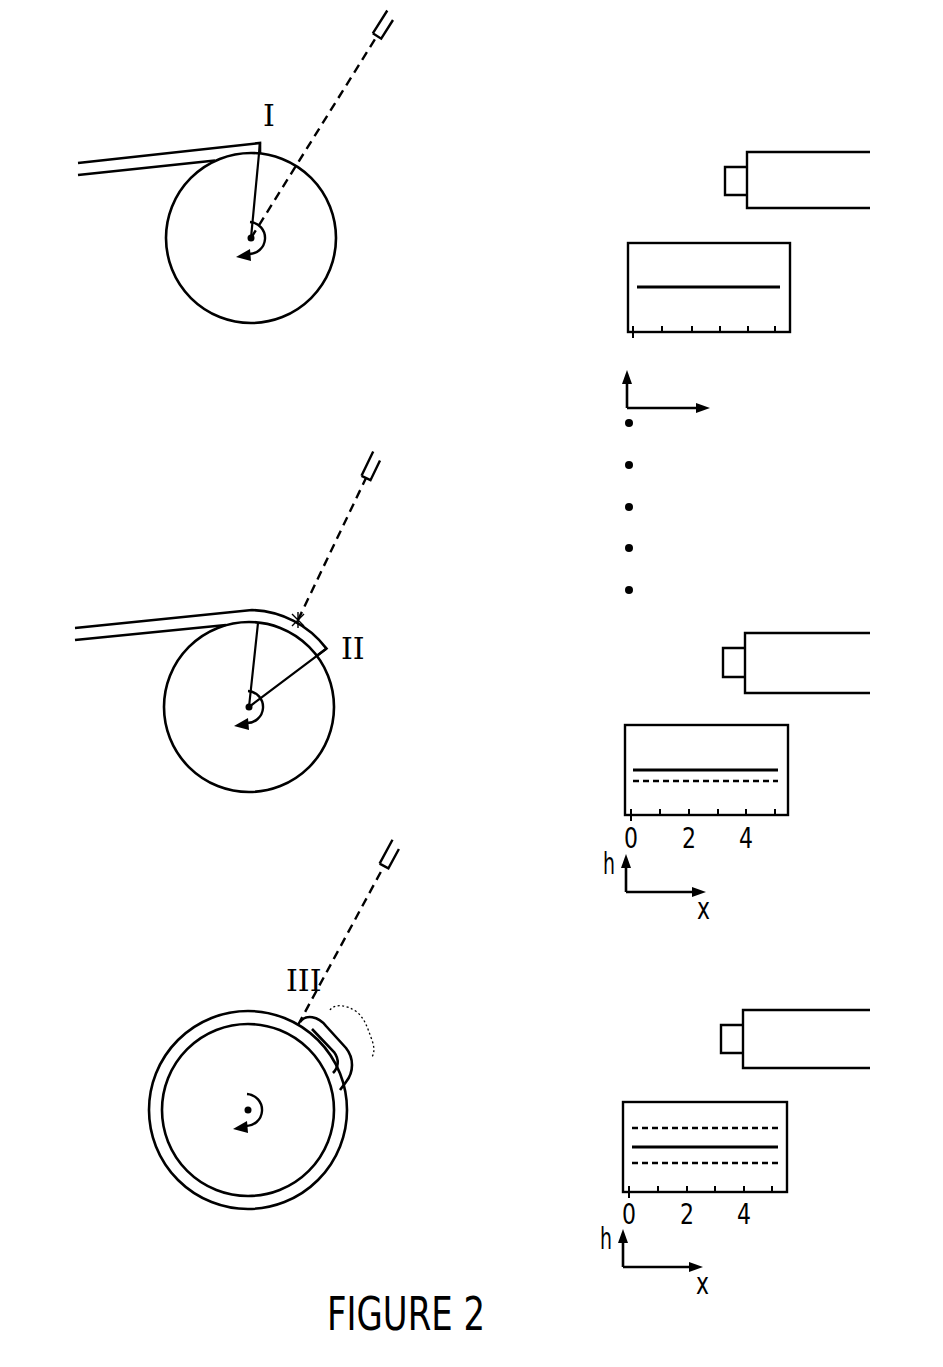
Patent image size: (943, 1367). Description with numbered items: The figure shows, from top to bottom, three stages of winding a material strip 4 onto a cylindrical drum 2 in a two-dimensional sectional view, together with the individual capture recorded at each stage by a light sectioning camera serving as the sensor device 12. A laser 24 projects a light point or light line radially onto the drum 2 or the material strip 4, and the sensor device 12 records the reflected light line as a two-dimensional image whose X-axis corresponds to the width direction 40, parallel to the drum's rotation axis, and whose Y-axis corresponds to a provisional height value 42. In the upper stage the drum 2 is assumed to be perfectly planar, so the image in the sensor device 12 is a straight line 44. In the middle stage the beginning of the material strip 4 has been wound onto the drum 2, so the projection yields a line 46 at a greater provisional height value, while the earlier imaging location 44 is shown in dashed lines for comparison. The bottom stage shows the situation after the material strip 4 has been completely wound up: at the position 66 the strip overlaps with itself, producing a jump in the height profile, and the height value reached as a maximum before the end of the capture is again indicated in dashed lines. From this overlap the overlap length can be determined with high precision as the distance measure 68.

The drum 2 is at (322, 290).
The material strip 4 is at (108, 161).
The sensor device 12 is at (798, 152).
The laser 24 is at (397, 22).
The width direction 40 is at (708, 436).
The provisional height value 42 is at (608, 366).
The straight line 44 is at (768, 287).
The line 46 is at (772, 781).
The position of overlap 66 is at (370, 1067).
The distance measure 68 is at (362, 1030).